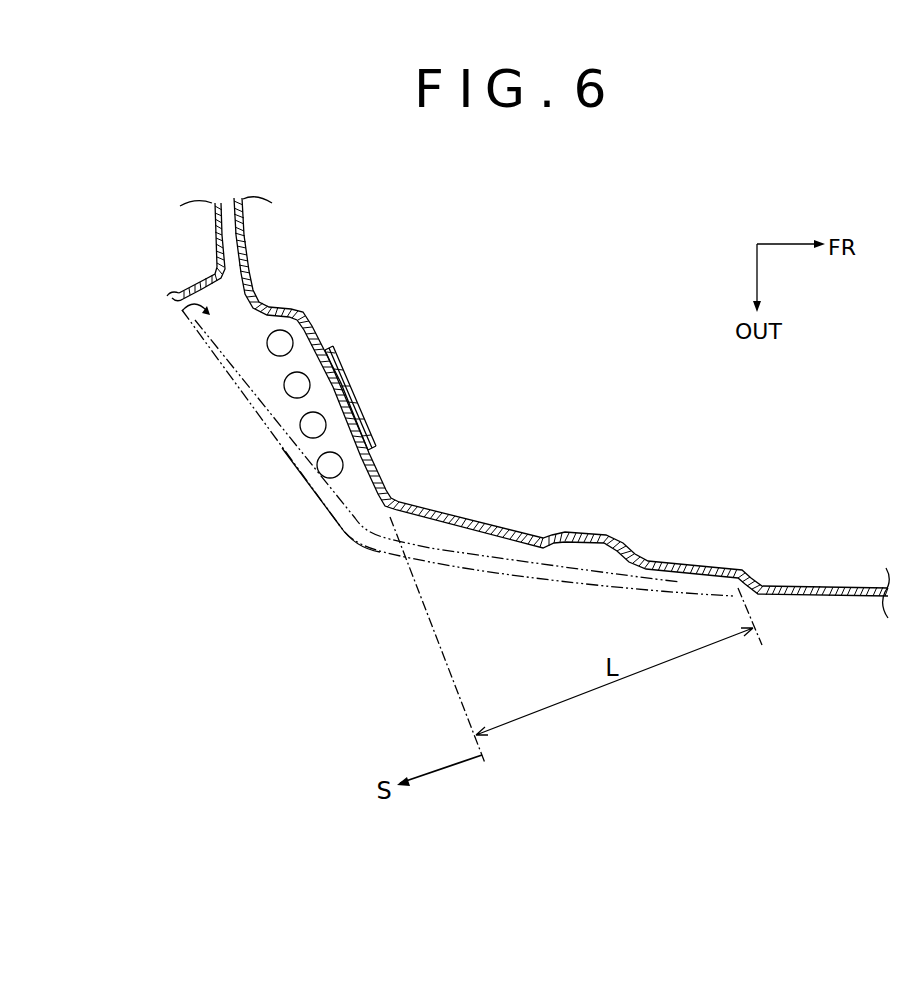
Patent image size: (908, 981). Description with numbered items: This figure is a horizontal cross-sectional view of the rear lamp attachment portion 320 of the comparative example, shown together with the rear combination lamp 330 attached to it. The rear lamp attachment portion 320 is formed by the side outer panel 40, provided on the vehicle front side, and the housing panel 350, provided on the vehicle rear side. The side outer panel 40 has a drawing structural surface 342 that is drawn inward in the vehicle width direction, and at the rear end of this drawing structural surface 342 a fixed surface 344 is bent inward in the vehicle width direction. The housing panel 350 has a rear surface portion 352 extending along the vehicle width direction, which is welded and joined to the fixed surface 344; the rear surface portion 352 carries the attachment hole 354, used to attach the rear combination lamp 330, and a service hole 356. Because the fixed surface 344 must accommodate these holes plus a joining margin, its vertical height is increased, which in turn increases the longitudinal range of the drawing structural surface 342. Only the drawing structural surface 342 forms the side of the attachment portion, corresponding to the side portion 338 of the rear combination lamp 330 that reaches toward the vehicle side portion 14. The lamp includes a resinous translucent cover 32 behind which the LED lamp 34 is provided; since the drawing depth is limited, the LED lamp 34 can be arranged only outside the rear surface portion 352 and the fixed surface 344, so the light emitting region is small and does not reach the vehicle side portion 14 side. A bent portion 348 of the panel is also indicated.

The vehicle side portion 14 is at (828, 597).
The translucent cover 32 is at (388, 541).
The LED lamp 34 is at (302, 436).
The side outer panel 40 is at (811, 578).
The rear lamp attachment portion 320 is at (180, 302).
The rear combination lamp 330 is at (340, 530).
The side portion 338 is at (523, 576).
The drawing structural surface 342 is at (510, 532).
The fixed surface 344 is at (363, 432).
The bent portion 348 is at (377, 473).
The housing panel 350 is at (272, 300).
The rear surface portion 352 is at (297, 311).
The attachment hole 354 is at (318, 335).
The service hole 356 is at (347, 385).